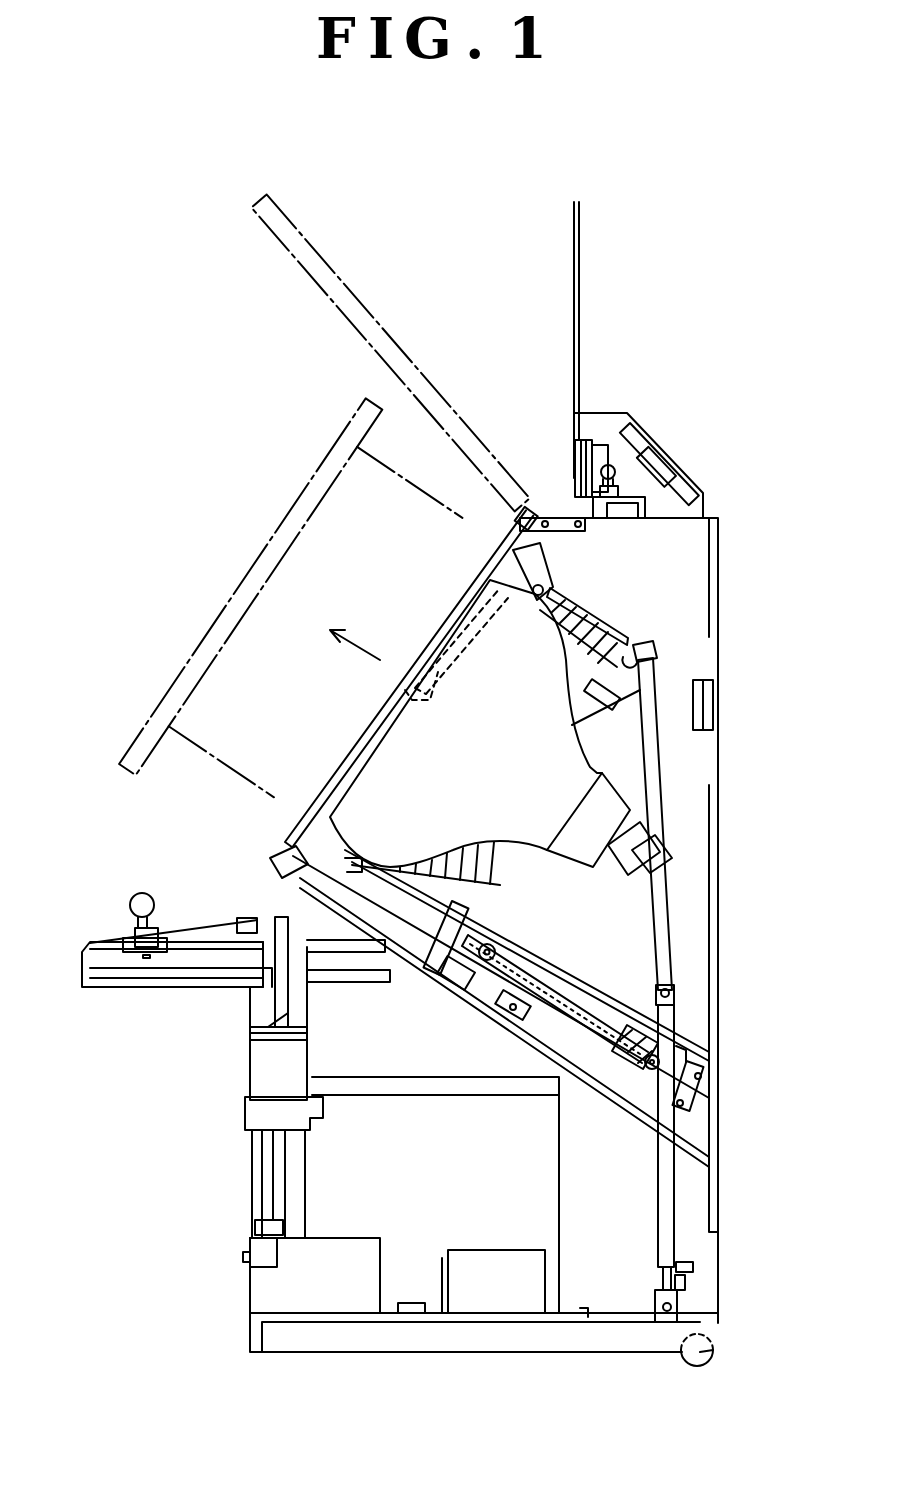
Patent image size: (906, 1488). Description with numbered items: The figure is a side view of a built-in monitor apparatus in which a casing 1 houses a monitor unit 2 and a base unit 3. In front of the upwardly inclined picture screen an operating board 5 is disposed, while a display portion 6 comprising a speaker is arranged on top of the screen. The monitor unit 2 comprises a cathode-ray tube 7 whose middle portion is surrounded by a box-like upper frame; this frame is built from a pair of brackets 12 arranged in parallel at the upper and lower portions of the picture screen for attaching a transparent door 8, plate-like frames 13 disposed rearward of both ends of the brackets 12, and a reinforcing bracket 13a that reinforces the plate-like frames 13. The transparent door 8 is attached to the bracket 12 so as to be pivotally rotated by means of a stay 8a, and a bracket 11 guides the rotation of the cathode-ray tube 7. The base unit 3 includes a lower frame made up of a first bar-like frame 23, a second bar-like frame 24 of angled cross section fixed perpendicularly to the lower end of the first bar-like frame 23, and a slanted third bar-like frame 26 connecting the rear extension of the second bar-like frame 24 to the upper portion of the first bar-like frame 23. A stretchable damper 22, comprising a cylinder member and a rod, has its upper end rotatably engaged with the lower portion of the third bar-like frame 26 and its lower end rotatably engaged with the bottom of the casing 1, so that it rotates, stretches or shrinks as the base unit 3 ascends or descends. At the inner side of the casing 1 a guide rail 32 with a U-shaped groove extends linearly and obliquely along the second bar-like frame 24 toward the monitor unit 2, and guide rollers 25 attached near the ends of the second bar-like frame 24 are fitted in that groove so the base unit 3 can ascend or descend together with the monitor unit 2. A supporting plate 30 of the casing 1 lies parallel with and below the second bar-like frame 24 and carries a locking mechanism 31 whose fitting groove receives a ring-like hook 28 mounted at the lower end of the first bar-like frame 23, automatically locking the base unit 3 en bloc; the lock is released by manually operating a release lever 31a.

The casing 1 is at (718, 602).
The monitor unit 2 is at (412, 635).
The base unit 3 is at (693, 981).
The operating board 5 is at (196, 920).
The display portion 6 is at (575, 445).
The cathode-ray tube 7 is at (497, 681).
The transparent door 8 is at (316, 283).
The stay 8a is at (448, 688).
The bracket 11 is at (586, 717).
The bracket 12 is at (525, 540).
The plate-like frame 13 is at (578, 601).
The reinforcing bracket 13a is at (583, 630).
The stretchable damper 22 is at (645, 1206).
The first bar-like frame 23 is at (488, 872).
The second bar-like frame 24 is at (680, 1045).
The guide roller 25 is at (494, 945).
The third bar-like frame 26 is at (663, 777).
The hook 28 is at (470, 970).
The supporting plate 30 is at (608, 1098).
The locking mechanism 31 is at (481, 1000).
The release lever 31a is at (497, 1000).
The guide rail 32 is at (548, 985).